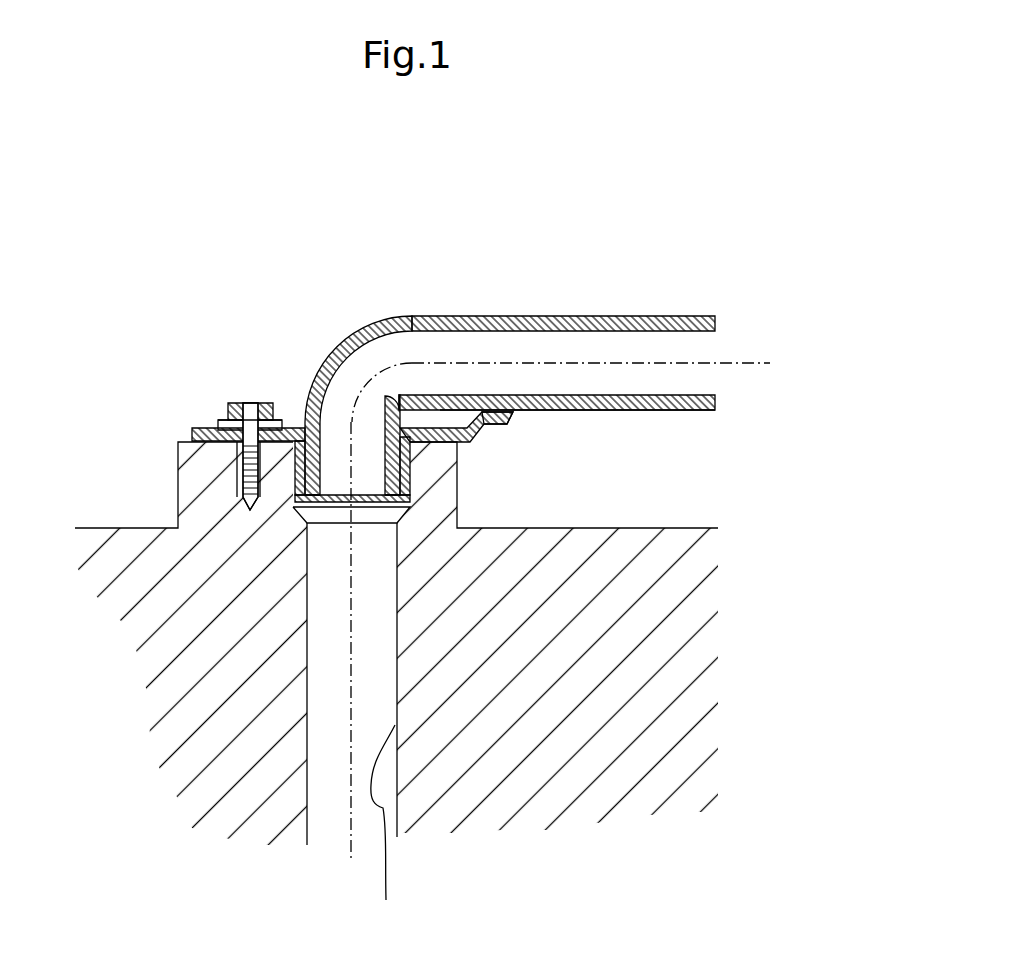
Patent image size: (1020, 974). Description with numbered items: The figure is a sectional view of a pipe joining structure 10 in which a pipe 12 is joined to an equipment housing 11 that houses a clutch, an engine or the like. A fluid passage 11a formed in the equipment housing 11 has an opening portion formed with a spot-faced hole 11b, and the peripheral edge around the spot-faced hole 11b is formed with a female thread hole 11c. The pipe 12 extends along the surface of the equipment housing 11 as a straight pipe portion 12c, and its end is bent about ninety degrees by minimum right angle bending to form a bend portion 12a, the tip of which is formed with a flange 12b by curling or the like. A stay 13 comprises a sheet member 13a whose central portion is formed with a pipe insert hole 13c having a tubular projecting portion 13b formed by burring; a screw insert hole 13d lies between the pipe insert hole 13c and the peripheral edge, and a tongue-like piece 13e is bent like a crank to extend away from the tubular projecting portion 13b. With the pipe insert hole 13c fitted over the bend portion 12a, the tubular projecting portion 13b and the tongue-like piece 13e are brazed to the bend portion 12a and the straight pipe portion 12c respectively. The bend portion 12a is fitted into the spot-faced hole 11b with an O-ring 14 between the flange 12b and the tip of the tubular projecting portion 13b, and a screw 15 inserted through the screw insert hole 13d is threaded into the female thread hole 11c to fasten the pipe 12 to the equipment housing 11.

The pipe joining structure 10 is at (229, 385).
The equipment housing 11 is at (597, 528).
The fluid passage 11a is at (360, 678).
The spot-faced hole 11b is at (323, 528).
The female thread hole 11c is at (237, 468).
The pipe 12 is at (575, 317).
The bend portion 12a is at (303, 432).
The flange 12b is at (412, 497).
The straight pipe portion 12c is at (560, 412).
The stay 13 is at (203, 427).
The sheet member 13a is at (197, 427).
The tubular projecting portion 13b is at (327, 431).
The pipe insert hole 13c is at (388, 458).
The screw insert hole 13d is at (260, 420).
The tongue-like piece 13e is at (507, 414).
The O-ring 14 is at (414, 472).
The screw 15 is at (237, 419).